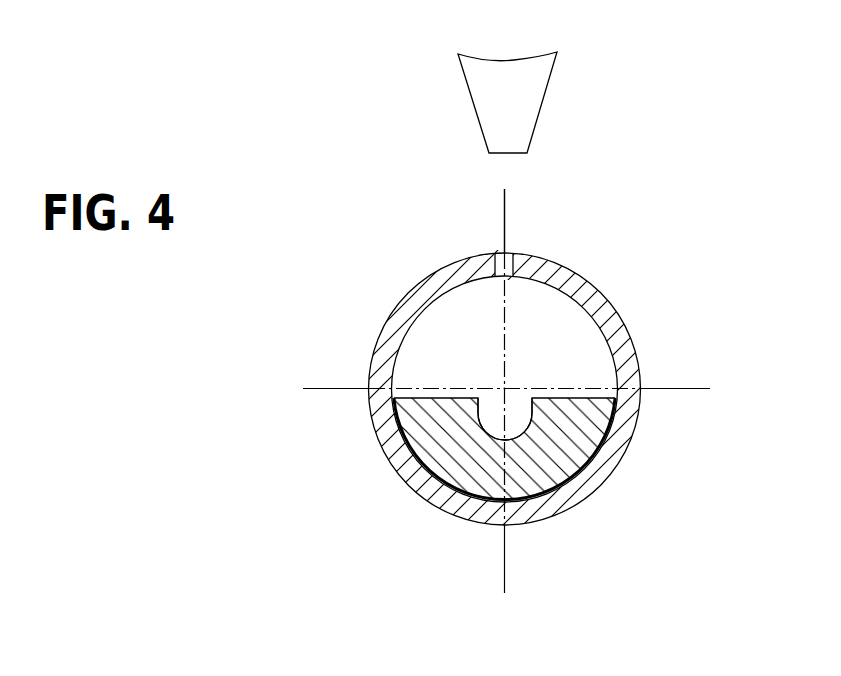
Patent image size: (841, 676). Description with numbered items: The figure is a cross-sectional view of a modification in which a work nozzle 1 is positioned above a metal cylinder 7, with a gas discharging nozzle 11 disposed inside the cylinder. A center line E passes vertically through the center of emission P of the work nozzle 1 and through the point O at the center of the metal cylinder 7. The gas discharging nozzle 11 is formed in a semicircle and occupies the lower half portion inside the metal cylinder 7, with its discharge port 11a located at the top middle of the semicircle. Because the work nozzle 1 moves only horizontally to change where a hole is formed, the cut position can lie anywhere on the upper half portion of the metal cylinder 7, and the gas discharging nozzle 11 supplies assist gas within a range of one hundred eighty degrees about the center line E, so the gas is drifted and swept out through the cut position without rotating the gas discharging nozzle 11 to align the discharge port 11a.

The work nozzle 1 is at (541, 106).
The center line E is at (505, 213).
The center of emission P is at (505, 252).
The metal cylinder 7 is at (618, 317).
The gas discharging nozzle 11 is at (575, 462).
The discharge port 11a is at (493, 403).
The center O is at (506, 388).